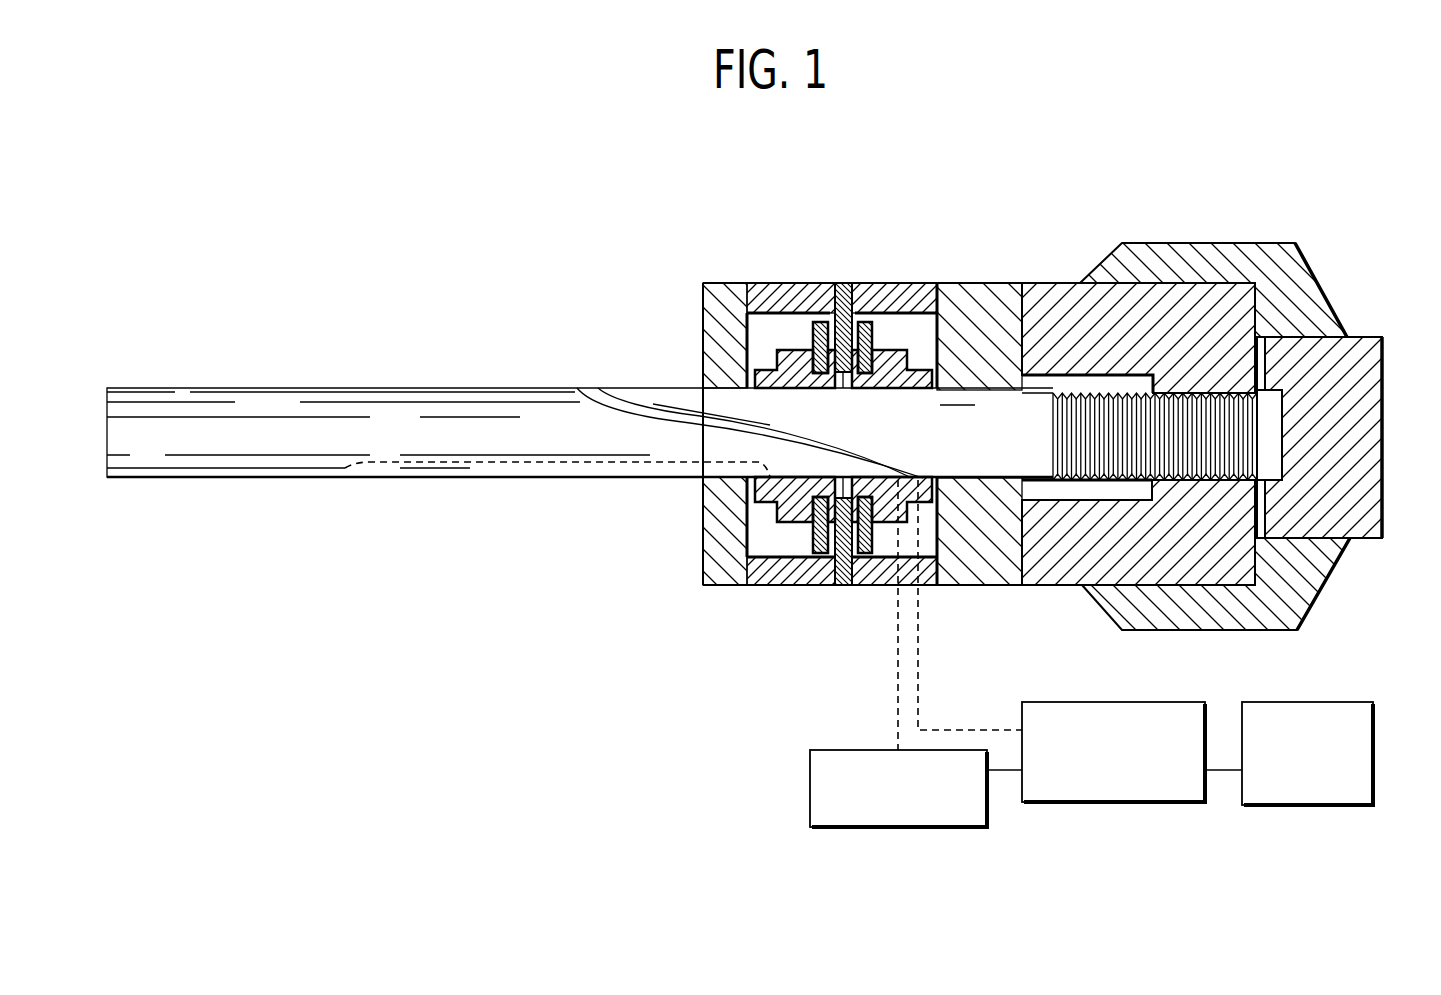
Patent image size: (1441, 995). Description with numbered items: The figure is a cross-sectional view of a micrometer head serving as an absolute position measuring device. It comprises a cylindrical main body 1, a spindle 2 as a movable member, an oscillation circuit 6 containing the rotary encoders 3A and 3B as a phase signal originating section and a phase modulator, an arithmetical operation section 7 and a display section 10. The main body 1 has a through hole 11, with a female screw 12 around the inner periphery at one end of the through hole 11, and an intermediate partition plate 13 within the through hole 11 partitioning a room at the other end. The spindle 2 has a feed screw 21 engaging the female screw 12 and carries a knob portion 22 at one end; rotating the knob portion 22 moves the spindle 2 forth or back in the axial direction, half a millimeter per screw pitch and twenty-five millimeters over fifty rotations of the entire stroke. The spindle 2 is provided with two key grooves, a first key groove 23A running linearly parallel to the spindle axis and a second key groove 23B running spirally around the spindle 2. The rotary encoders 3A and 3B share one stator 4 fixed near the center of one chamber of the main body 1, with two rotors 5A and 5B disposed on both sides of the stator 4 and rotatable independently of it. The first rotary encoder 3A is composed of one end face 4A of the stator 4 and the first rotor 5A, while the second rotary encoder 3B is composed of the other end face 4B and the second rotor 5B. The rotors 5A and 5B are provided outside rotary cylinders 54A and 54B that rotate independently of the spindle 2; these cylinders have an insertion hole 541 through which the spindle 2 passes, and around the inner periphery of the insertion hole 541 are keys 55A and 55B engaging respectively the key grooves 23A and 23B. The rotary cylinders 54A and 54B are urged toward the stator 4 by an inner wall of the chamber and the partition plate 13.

The main body 1 is at (1057, 274).
The spindle 2 is at (230, 505).
The first rotary encoder 3A is at (739, 407).
The second rotary encoder 3B is at (920, 407).
The stator 4 is at (843, 283).
The one end face of the stator 4A is at (815, 322).
The other end face of the stator 4B is at (866, 322).
The first rotor 5A is at (790, 347).
The second rotor 5B is at (882, 335).
The oscillation circuit 6 is at (960, 831).
The arithmetical operation section 7 is at (1172, 805).
The display section 10 is at (1345, 808).
The through hole 11 is at (1058, 490).
The female screw 12 is at (1218, 463).
The intermediate partition plate 13 is at (978, 283).
The feed screw 21 is at (1160, 480).
The knob portion 22 is at (1372, 482).
The first key groove 23A is at (553, 480).
The second key groove 23B is at (652, 387).
The first rotary cylinder 54A is at (802, 522).
The second rotary cylinder 54B is at (884, 522).
The first key 55A is at (757, 505).
The second key 55B is at (937, 522).
The insertion hole 541 is at (753, 297).